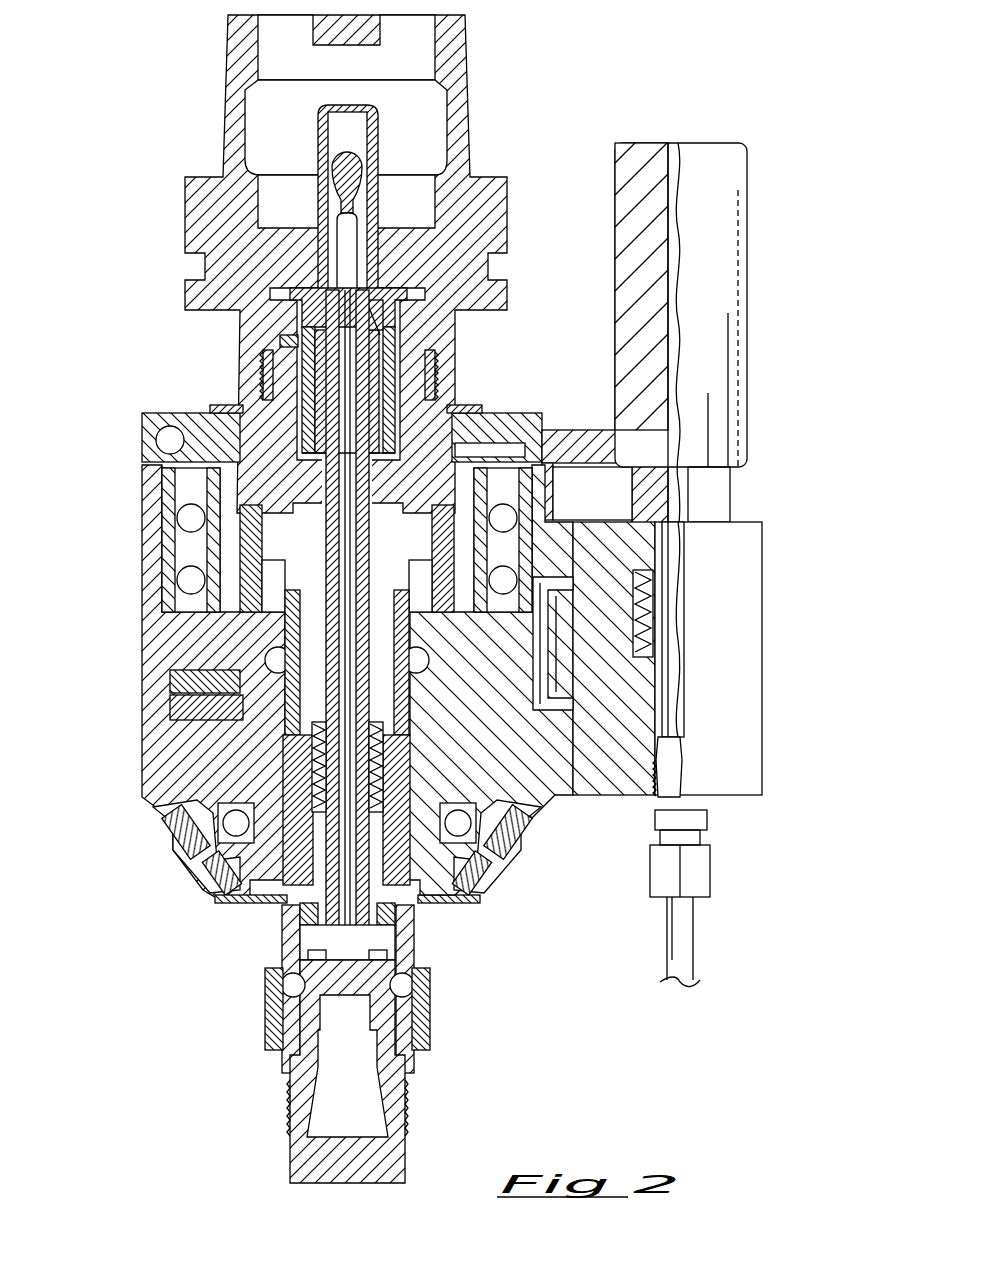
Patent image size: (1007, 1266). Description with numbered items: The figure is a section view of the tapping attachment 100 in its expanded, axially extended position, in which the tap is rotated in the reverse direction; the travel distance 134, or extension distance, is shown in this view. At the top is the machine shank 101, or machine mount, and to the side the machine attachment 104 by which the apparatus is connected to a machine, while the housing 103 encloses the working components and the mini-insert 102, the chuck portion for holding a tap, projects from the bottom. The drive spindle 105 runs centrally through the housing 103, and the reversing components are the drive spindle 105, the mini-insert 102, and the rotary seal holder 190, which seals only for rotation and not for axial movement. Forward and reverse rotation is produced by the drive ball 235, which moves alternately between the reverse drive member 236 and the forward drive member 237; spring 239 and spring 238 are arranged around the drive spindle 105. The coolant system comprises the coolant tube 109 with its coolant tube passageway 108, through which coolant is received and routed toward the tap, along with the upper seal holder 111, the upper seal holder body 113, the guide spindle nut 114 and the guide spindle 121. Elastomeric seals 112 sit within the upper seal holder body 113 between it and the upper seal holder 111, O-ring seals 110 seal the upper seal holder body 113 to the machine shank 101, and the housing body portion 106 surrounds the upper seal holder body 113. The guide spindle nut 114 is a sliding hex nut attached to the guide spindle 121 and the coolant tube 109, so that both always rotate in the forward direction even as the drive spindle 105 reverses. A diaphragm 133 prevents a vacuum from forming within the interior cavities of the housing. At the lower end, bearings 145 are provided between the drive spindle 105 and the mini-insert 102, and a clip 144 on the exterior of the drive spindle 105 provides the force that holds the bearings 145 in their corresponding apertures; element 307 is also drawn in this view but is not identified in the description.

The tapping attachment 100 is at (166, 278).
The machine shank 101 is at (455, 60).
The mini-insert 102 is at (382, 1013).
The housing 103 is at (170, 797).
The machine attachment 104 is at (715, 222).
The drive spindle 105 is at (285, 556).
The housing body portion 106 is at (425, 437).
The coolant tube passageway 108 is at (440, 312).
The coolant tube 109 is at (290, 348).
The O-ring seals 110 is at (390, 295).
The upper seal holder 111 is at (410, 350).
The elastomeric seals 112 is at (266, 352).
The upper seal holder body 113 is at (303, 405).
The guide spindle nut 114 is at (222, 894).
The guide spindle 121 is at (376, 462).
The diaphragm 133 is at (555, 672).
The travel distance 134 is at (262, 905).
The clip 144 is at (280, 984).
The bearings 145 is at (287, 998).
The rotary seal holder 190 is at (388, 913).
The drive ball 235 is at (570, 624).
The reverse drive member 236 is at (523, 713).
The forward drive member 237 is at (575, 560).
The spring 238 is at (240, 716).
The spring 239 is at (262, 618).
The ring 307 is at (243, 695).